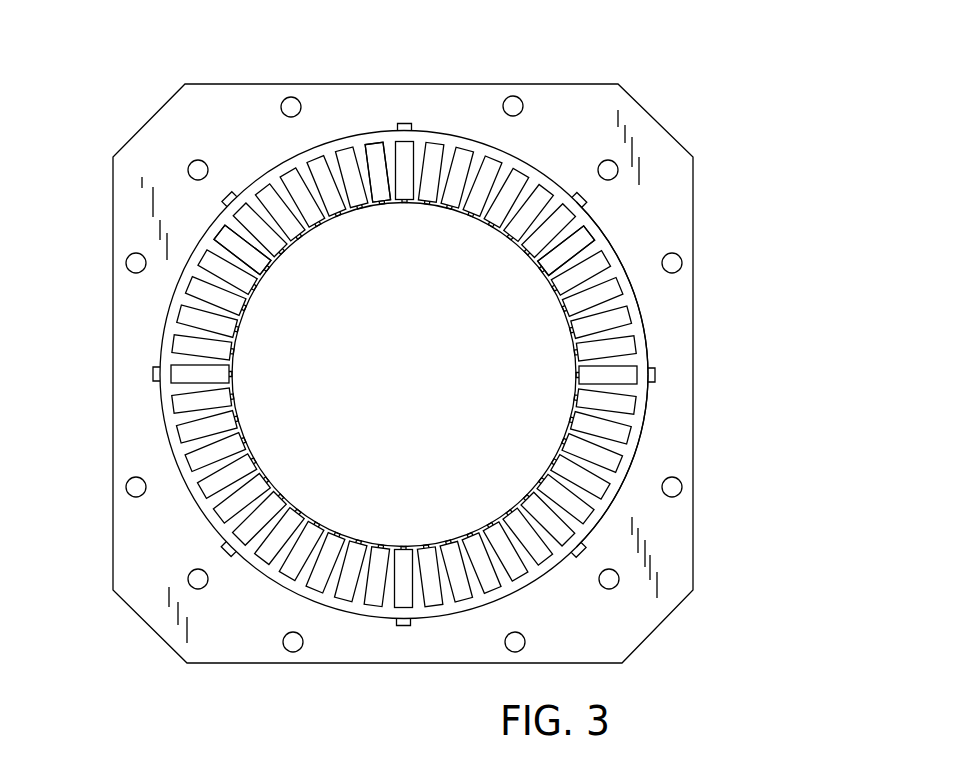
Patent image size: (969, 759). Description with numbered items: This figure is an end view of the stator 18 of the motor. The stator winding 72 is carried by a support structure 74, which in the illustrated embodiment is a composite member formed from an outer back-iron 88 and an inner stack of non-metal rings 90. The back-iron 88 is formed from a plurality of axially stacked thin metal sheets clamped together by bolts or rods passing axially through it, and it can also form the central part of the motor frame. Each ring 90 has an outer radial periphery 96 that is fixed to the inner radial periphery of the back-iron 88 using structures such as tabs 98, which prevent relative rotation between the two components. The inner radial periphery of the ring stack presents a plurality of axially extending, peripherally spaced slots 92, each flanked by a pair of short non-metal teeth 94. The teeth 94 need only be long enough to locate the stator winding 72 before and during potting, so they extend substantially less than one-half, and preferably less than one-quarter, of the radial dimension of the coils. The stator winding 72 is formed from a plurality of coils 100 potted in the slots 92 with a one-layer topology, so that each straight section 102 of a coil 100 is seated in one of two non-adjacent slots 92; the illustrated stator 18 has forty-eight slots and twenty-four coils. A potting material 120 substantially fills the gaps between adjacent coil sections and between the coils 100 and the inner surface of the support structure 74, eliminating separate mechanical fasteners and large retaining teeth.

The stator 18 is at (599, 46).
The stator winding 72 is at (606, 238).
The support structure 74 is at (406, 82).
The back-iron 88 is at (677, 398).
The non-metal ring 90 is at (640, 328).
The slot 92 is at (595, 515).
The tooth 94 is at (587, 535).
The outer radial periphery 96 is at (650, 423).
The tab 98 is at (655, 373).
The coil 100 is at (233, 332).
The straight section 102 is at (258, 548).
The potting material 120 is at (262, 552).